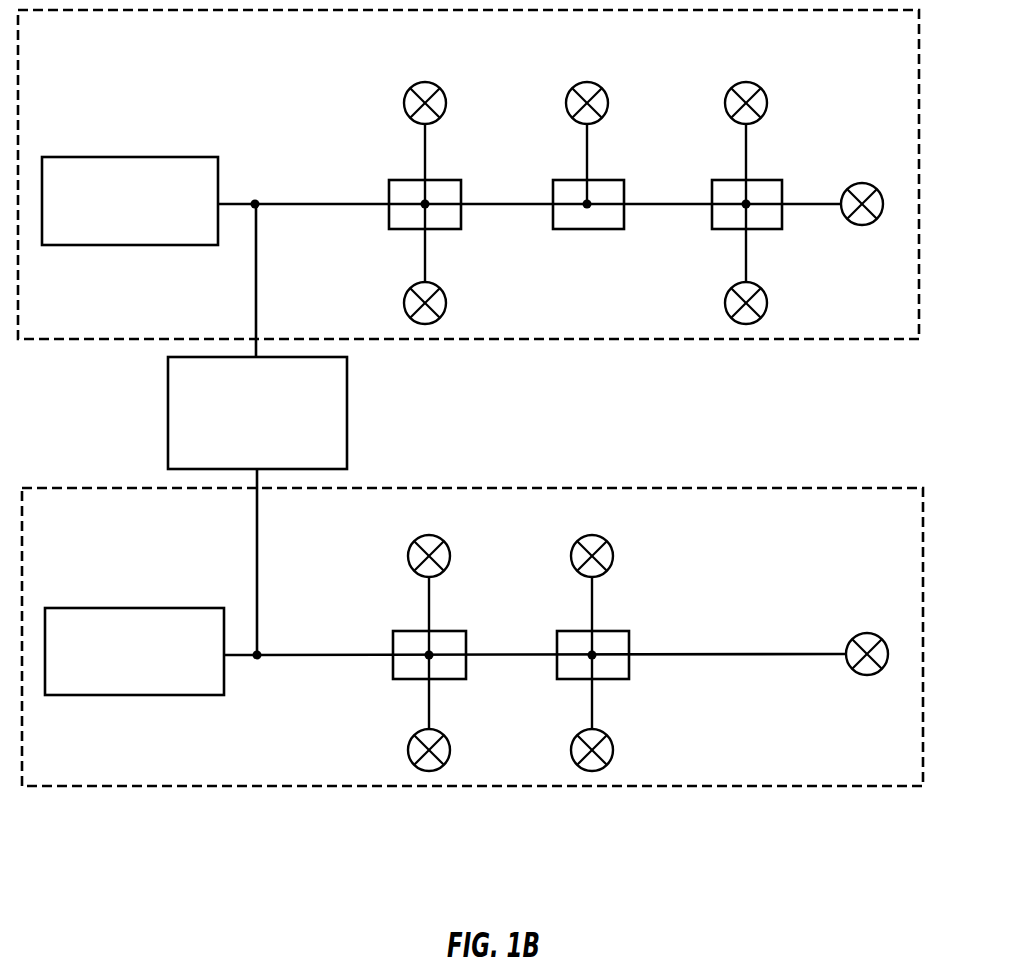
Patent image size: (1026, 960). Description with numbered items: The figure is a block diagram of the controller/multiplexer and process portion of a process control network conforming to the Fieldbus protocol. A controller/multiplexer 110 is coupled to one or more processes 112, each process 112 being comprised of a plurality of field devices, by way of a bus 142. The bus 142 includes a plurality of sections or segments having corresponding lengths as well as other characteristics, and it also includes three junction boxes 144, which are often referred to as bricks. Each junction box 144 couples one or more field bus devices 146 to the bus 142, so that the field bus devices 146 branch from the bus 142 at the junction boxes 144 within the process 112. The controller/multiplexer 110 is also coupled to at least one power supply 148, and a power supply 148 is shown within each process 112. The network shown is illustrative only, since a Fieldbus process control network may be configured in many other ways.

The controller/multiplexer 110 is at (280, 458).
The process 112 is at (864, 550).
The bus 142 is at (529, 186).
The junction box 144 is at (556, 238).
The field bus device 146 is at (552, 185).
The power supply 148 is at (157, 676).